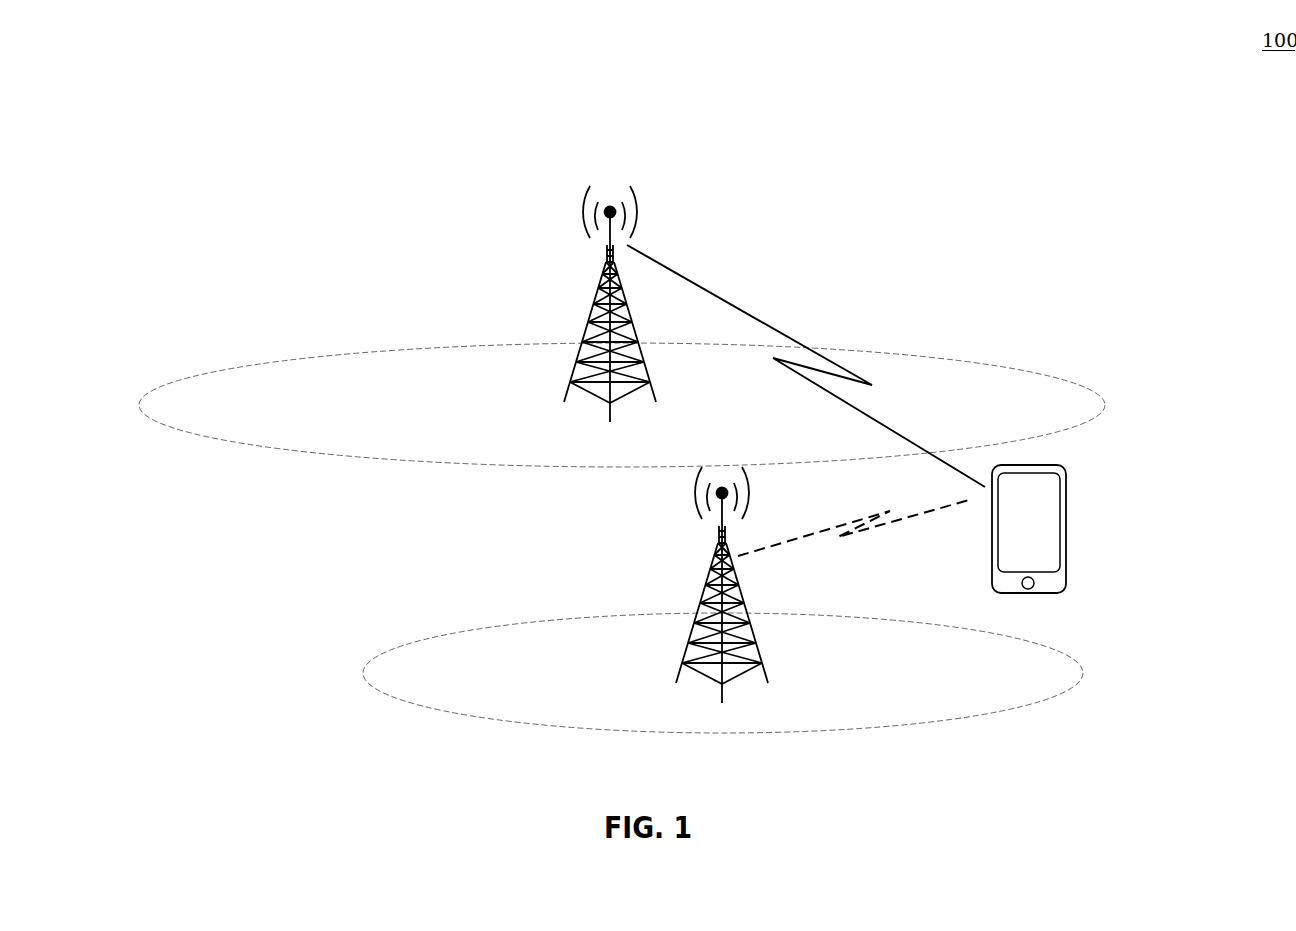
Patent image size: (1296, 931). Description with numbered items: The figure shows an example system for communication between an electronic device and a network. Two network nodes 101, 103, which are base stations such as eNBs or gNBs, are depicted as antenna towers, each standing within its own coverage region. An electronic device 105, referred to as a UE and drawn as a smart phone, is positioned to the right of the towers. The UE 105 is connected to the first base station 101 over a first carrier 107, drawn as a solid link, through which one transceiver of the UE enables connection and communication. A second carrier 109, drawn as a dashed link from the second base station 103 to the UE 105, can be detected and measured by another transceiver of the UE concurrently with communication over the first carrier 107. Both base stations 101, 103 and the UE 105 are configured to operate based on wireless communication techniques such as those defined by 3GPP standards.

The network node 101 is at (597, 302).
The network node 103 is at (697, 590).
The electronic device 105 is at (1066, 483).
The carrier 107 is at (806, 366).
The carrier 109 is at (853, 535).